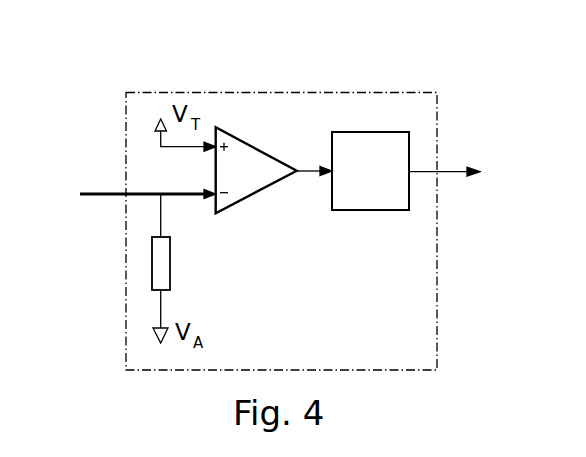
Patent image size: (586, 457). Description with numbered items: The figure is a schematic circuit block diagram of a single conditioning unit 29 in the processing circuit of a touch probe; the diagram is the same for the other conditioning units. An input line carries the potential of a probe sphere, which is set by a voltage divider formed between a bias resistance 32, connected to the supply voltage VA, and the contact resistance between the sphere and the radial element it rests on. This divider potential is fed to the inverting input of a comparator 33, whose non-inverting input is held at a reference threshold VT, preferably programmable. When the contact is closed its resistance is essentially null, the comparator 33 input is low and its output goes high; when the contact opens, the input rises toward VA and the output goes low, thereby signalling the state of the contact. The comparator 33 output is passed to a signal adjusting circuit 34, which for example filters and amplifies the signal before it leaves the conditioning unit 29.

The conditioning unit 29 is at (385, 288).
The bias resistance 32 is at (163, 265).
The comparator 33 is at (255, 170).
The signal adjusting circuit 34 is at (375, 155).